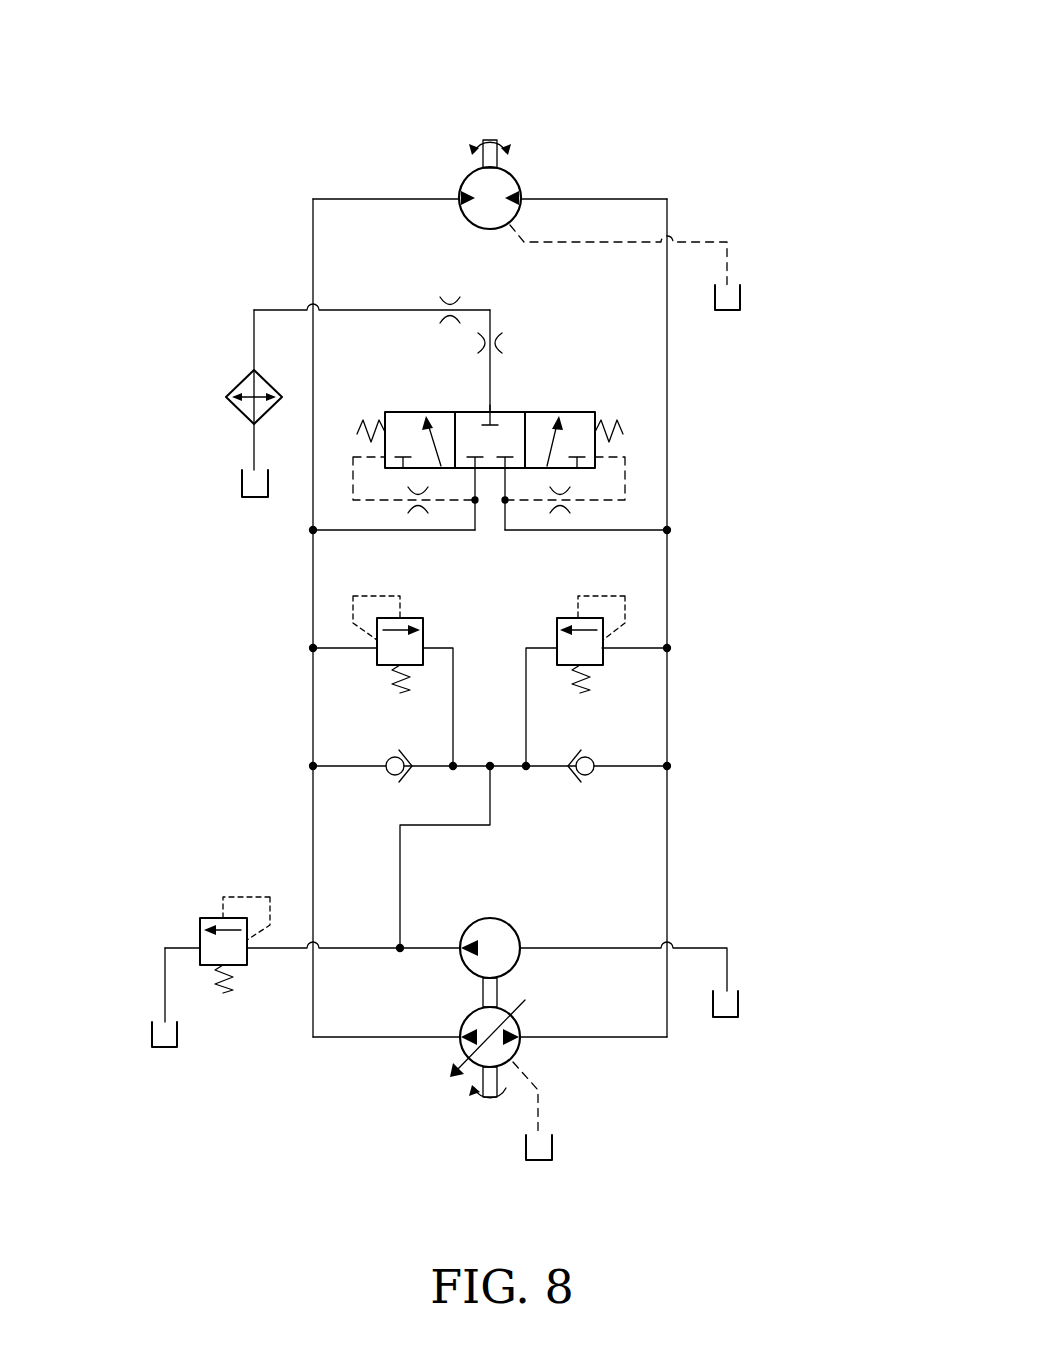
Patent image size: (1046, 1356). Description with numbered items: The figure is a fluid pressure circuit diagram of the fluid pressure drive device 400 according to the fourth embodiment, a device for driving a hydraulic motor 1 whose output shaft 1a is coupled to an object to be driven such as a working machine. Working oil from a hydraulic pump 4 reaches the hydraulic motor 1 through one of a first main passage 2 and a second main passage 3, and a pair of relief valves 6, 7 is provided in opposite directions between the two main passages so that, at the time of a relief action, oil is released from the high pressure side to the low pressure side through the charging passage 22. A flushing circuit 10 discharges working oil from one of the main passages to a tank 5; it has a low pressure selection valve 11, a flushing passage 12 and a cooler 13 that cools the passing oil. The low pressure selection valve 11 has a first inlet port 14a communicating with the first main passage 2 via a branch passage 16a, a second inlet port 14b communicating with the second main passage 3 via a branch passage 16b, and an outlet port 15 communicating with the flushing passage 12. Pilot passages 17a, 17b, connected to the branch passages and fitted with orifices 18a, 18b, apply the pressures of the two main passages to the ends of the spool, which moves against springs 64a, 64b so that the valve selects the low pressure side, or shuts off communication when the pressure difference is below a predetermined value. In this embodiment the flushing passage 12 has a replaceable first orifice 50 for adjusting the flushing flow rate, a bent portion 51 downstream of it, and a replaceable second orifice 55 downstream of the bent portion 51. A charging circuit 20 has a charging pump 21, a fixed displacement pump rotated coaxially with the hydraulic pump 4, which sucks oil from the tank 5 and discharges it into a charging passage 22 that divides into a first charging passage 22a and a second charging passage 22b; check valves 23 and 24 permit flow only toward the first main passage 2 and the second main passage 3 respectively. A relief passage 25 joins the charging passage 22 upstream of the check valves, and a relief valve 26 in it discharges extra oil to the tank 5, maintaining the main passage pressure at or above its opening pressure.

The fluid pressure drive device 400 is at (609, 105).
The hydraulic motor 1 is at (462, 183).
The output shaft 1a is at (499, 160).
The first main passage 2 is at (311, 568).
The second main passage 3 is at (669, 563).
The hydraulic pump 4 is at (522, 1049).
The tank 5 is at (241, 487).
The relief valve 6 is at (377, 665).
The relief valve 7 is at (603, 665).
The flushing circuit 10 is at (577, 362).
The low pressure selection valve 11 is at (396, 411).
The flushing passage 12 is at (390, 309).
The cooler 13 is at (240, 388).
The first inlet port 14a is at (474, 487).
The second inlet port 14b is at (506, 487).
The outlet port 15 is at (489, 404).
The branch passage 16a is at (340, 536).
The branch passage 16b is at (640, 536).
The pilot passage 17a is at (383, 503).
The pilot passage 17b is at (597, 503).
The orifice 18a is at (400, 605).
The orifice 18b is at (580, 605).
The charging circuit 20 is at (508, 834).
The charging pump 21 is at (490, 917).
The charging passage 22 is at (398, 866).
The first charging passage 22a is at (345, 770).
The second charging passage 22b is at (640, 770).
The check valve 23 is at (402, 752).
The check valve 24 is at (581, 752).
The relief passage 25 is at (352, 950).
The relief valve 26 is at (204, 917).
The first orifice 50 is at (500, 341).
The bent portion 51 is at (492, 311).
The second orifice 55 is at (450, 296).
The spring 64a is at (368, 404).
The spring 64b is at (613, 404).